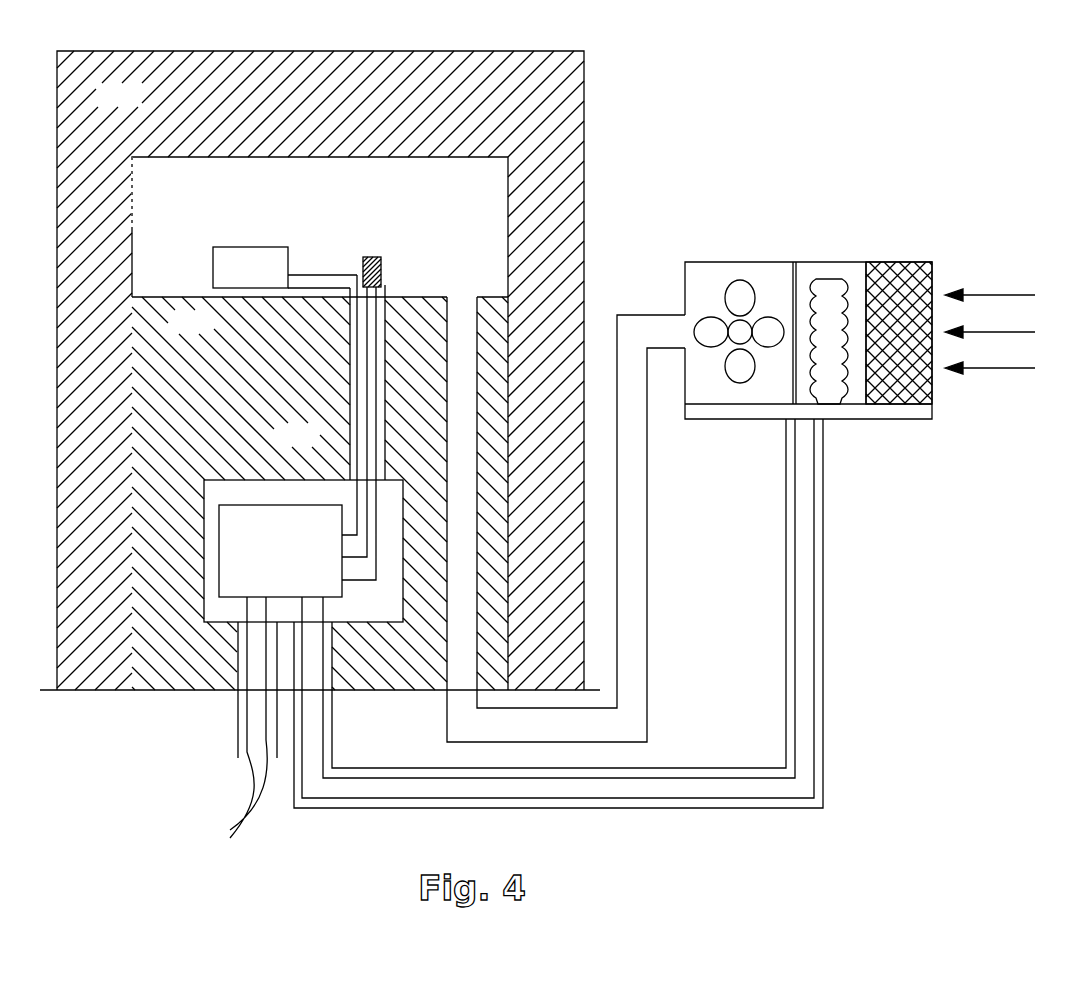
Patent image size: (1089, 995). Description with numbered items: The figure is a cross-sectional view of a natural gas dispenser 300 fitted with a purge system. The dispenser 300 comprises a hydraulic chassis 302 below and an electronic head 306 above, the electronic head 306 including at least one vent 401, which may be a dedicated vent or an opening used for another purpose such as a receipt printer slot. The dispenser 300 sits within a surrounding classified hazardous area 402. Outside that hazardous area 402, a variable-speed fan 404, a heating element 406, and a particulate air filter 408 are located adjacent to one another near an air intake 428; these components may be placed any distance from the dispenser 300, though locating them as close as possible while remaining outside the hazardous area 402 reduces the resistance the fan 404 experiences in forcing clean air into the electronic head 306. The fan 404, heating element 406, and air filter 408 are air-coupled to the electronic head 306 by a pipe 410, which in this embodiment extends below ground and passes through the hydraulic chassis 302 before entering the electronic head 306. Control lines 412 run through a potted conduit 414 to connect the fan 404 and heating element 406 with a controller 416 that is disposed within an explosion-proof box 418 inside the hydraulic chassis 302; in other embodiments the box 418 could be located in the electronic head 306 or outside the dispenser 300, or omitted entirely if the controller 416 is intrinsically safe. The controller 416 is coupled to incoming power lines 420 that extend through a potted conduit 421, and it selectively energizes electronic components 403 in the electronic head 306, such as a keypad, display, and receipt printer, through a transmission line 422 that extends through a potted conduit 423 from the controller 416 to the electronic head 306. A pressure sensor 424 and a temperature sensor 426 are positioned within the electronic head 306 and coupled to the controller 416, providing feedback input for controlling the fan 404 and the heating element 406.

The dispenser 300 is at (537, 452).
The hydraulic chassis 302 is at (172, 333).
The electronic head 306 is at (208, 158).
The vent 401 is at (134, 203).
The classified hazardous area 402 is at (100, 106).
The electronic components 403 is at (234, 281).
The variable-speed fan 404 is at (742, 300).
The heating element 406 is at (828, 290).
The particulate air filter 408 is at (905, 268).
The pipe 410 is at (633, 617).
The control lines 412 is at (590, 778).
The potted conduit 414 is at (735, 812).
The controller 416 is at (229, 588).
The explosion-proof box 418 is at (350, 614).
The incoming power lines 420 is at (225, 722).
The potted conduit 421 is at (237, 718).
The transmission line 422 is at (333, 274).
The potted conduit 423 is at (348, 462).
The pressure sensor 424 is at (365, 256).
The temperature sensor 426 is at (383, 264).
The air intake 428 is at (1022, 372).